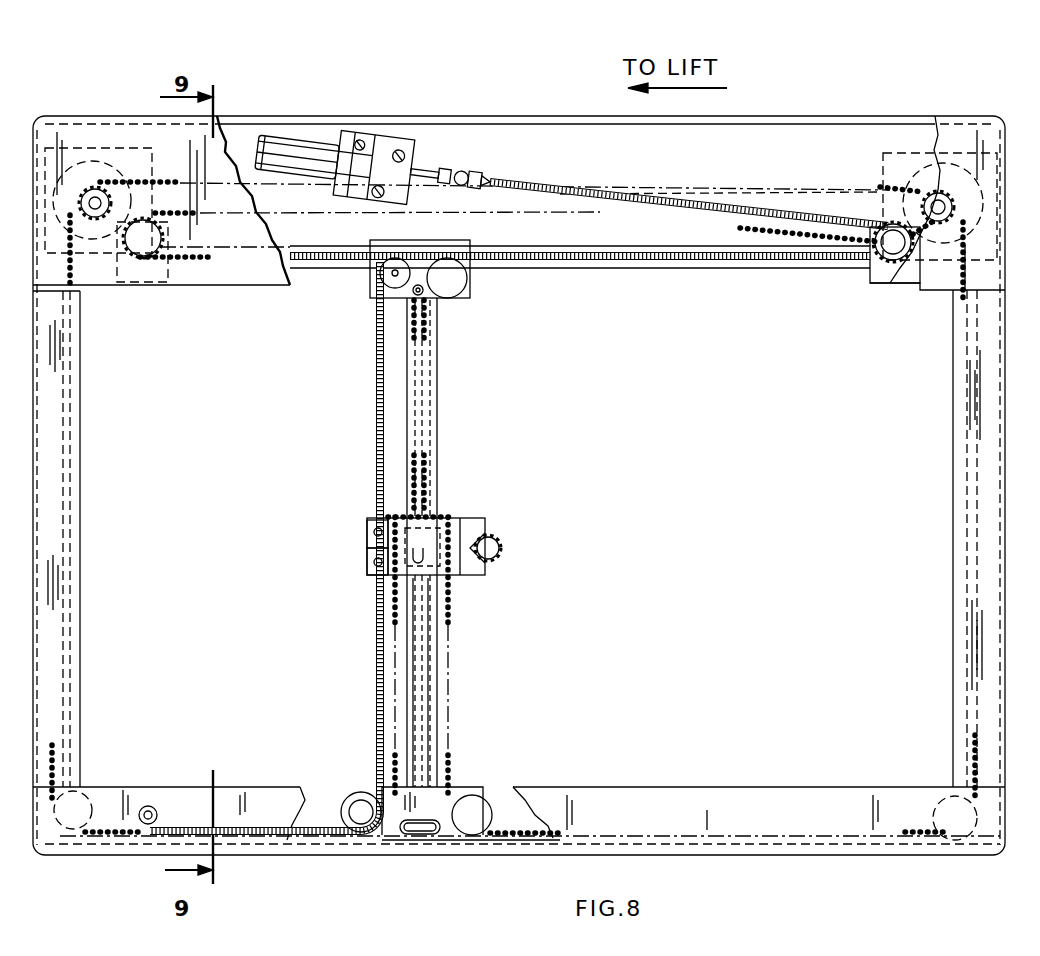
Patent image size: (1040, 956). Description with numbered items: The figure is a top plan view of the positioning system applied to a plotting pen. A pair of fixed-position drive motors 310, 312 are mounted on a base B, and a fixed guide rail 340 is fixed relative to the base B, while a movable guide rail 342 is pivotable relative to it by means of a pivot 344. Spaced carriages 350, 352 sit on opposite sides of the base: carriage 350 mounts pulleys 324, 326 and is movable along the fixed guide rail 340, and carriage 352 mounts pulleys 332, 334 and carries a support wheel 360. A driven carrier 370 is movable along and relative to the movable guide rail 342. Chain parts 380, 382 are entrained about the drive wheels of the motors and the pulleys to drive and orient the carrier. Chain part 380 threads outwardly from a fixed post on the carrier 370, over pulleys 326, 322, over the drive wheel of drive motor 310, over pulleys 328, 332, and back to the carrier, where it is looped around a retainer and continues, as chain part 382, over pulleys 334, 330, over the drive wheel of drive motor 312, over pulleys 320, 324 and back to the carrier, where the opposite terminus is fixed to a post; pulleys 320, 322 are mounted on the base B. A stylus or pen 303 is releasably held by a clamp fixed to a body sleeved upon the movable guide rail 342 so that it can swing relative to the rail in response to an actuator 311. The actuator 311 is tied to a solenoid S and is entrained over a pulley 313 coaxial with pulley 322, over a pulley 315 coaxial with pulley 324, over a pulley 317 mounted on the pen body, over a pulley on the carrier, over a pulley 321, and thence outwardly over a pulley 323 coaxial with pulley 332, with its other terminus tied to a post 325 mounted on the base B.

The stylus or pen 303 is at (499, 548).
The drive motor 310 is at (95, 158).
The actuator 311 is at (573, 192).
The drive motor 312 is at (962, 150).
The pulley 313 is at (893, 252).
The pulley 315 is at (393, 270).
The pulley 317 is at (372, 530).
The pulley 320 is at (145, 262).
The pulley 321 is at (375, 562).
The pulley 322 is at (867, 276).
The pulley 323 is at (362, 808).
The pulley 324 is at (378, 250).
The post 325 is at (148, 824).
The pulley 326 is at (455, 282).
The pulley 328 is at (95, 790).
The pulley 330 is at (942, 797).
The pulley 332 is at (323, 788).
The pulley 334 is at (472, 822).
The fixed guide rail 340 is at (313, 270).
The movable guide rail 342 is at (438, 488).
The pivot 344 is at (422, 295).
The carriage 350 is at (472, 298).
The carriage 352 is at (392, 826).
The support wheel 360 is at (430, 834).
The driven carrier 370 is at (465, 520).
The chain part 380 is at (70, 465).
The chain part 382 is at (803, 190).
The solenoid S is at (300, 138).
The base B is at (228, 398).